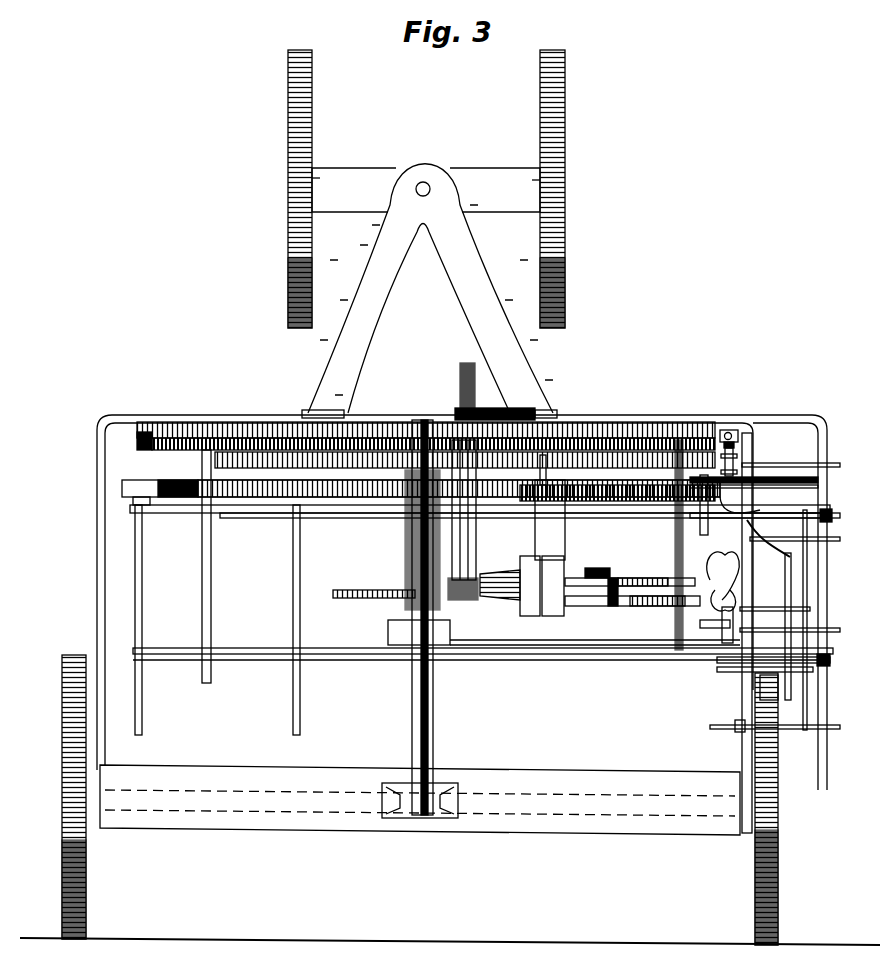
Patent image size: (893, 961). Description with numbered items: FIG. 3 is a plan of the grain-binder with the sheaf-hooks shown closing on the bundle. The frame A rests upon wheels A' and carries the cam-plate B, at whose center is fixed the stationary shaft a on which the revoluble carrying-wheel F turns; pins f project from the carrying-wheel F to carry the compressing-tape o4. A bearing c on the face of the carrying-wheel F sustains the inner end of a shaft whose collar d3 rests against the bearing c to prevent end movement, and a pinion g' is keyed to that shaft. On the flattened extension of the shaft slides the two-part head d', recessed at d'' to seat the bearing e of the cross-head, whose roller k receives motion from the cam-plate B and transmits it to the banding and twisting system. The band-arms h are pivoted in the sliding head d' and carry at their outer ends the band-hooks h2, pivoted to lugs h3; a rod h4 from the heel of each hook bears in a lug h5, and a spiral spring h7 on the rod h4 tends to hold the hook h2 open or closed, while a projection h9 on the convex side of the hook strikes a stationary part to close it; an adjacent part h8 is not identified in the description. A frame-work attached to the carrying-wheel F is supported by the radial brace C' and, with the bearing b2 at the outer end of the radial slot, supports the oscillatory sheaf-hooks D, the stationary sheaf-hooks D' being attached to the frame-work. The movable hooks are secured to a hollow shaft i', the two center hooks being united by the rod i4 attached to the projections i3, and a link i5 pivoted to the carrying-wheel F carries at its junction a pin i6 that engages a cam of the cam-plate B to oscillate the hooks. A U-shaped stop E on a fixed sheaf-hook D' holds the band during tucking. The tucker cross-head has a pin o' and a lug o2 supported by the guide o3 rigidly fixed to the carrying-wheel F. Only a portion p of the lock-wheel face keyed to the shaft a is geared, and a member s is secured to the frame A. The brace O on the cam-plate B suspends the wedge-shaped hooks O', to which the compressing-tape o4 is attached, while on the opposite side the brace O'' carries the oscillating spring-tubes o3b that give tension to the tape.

The wheels A' is at (417, 497).
The frame A is at (450, 554).
The cam-plate B is at (426, 461).
The carrying-wheel F is at (476, 490).
The pins f is at (296, 619).
The stationary shaft a is at (482, 607).
The brace O'' is at (222, 566).
The compressing-tape o4 is at (365, 518).
The guide o3 is at (355, 655).
The geared portion of lock-wheel face p is at (374, 585).
The roller k is at (466, 538).
The radial brace C' is at (595, 632).
The bearing c is at (464, 510).
The collar d3 is at (463, 578).
The pinion g' is at (500, 577).
The sliding head d' is at (530, 577).
The central recess d'' is at (560, 578).
The bearing e is at (550, 520).
The band-arms h is at (632, 596).
The rod h4 is at (597, 586).
The lug h5 is at (619, 585).
The spiral spring h7 is at (651, 582).
The band-hooks h2 is at (714, 568).
The projection h9 is at (727, 583).
The lugs h3 is at (701, 619).
The latch h8 is at (724, 625).
The U-shaped stop E is at (715, 598).
The oscillatory sheaf-hooks D is at (746, 633).
The stationary sheaf-hooks D' is at (793, 556).
The wedge-shaped hooks O' is at (765, 580).
The member secured to the frame s is at (775, 591).
The pin o' is at (729, 419).
The brace O is at (801, 407).
The lug o2 is at (738, 444).
The spring-tubes o3b is at (737, 465).
The bearing b2 is at (746, 503).
The pin i6 is at (650, 469).
The link i5 is at (625, 479).
The rod i4 is at (751, 527).
The projections i3 is at (774, 574).
The hollow shaft i' is at (769, 668).